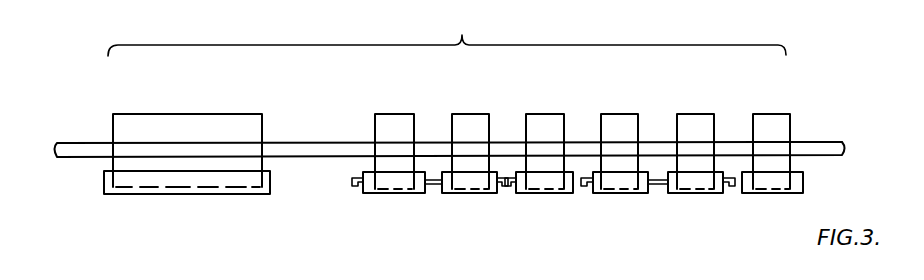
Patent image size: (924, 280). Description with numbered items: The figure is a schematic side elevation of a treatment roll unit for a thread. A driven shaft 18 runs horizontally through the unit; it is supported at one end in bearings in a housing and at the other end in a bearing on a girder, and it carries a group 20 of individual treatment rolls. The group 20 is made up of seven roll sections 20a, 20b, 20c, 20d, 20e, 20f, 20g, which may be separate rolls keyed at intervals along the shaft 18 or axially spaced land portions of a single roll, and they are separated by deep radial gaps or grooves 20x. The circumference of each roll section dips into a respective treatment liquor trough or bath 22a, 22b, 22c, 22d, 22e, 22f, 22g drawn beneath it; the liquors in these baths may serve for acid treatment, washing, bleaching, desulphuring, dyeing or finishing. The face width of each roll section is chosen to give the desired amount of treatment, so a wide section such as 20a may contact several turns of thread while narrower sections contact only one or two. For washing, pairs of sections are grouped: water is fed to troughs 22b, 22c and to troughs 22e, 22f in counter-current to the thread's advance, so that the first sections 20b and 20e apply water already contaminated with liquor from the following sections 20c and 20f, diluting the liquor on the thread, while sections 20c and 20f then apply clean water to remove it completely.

The driven shaft 18 is at (318, 155).
The group of treatment rolls 20 is at (447, 33).
The treatment roll section 20a is at (184, 128).
The treatment roll section 20b is at (393, 126).
The treatment roll section 20c is at (472, 126).
The treatment roll section 20d is at (546, 126).
The treatment roll section 20e is at (622, 126).
The treatment roll section 20f is at (692, 126).
The treatment roll section 20g is at (768, 128).
The radial gaps or grooves 20x is at (372, 112).
The treatment liquor trough 22a is at (211, 194).
The treatment liquor trough 22b is at (402, 193).
The treatment liquor trough 22c is at (472, 193).
The treatment liquor trough 22d is at (552, 193).
The treatment liquor trough 22e is at (620, 193).
The treatment liquor trough 22f is at (698, 193).
The treatment liquor trough 22g is at (772, 193).